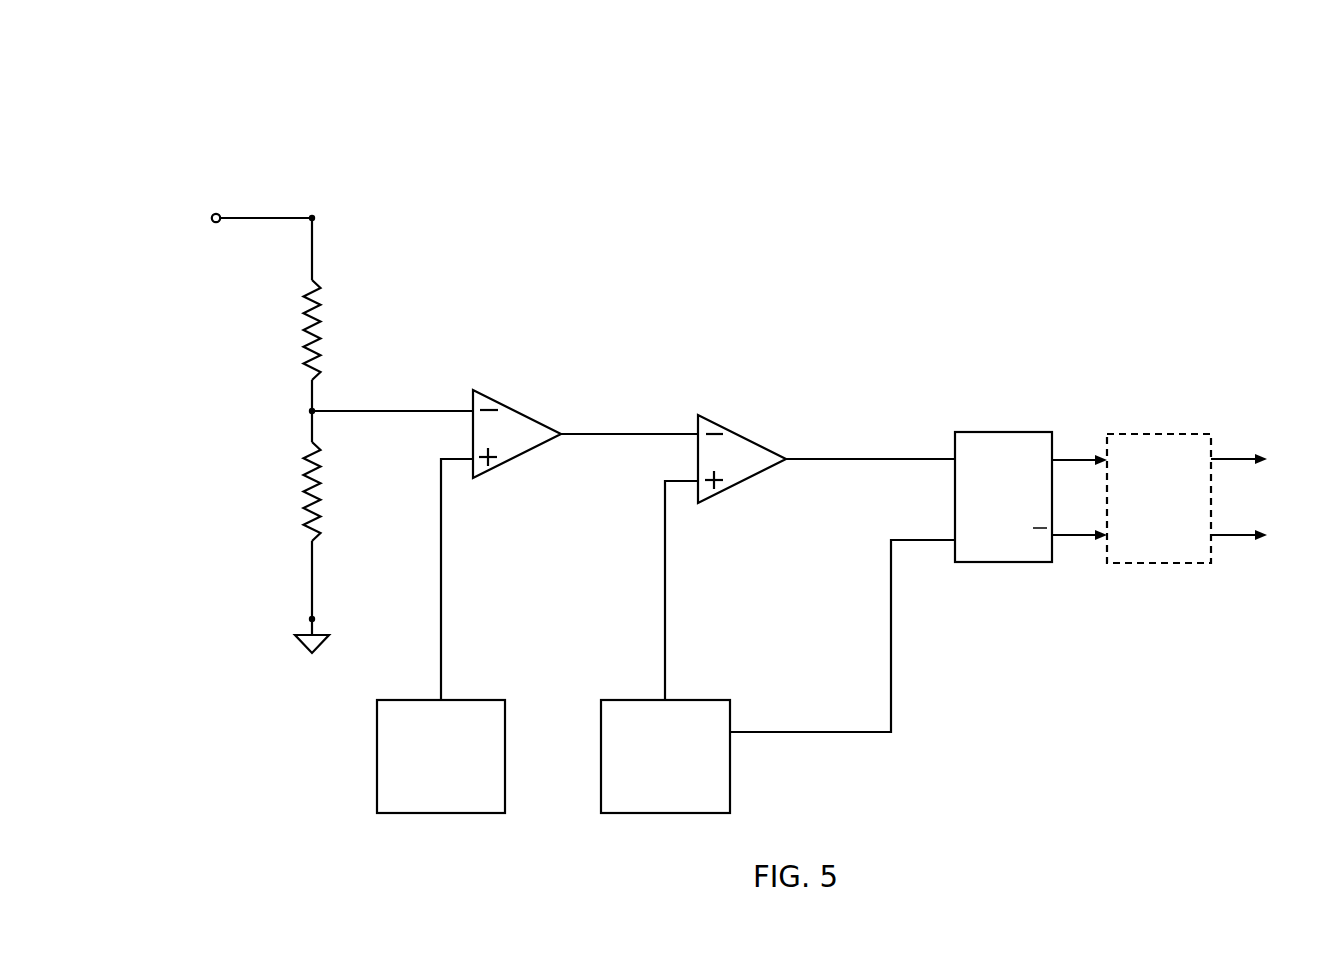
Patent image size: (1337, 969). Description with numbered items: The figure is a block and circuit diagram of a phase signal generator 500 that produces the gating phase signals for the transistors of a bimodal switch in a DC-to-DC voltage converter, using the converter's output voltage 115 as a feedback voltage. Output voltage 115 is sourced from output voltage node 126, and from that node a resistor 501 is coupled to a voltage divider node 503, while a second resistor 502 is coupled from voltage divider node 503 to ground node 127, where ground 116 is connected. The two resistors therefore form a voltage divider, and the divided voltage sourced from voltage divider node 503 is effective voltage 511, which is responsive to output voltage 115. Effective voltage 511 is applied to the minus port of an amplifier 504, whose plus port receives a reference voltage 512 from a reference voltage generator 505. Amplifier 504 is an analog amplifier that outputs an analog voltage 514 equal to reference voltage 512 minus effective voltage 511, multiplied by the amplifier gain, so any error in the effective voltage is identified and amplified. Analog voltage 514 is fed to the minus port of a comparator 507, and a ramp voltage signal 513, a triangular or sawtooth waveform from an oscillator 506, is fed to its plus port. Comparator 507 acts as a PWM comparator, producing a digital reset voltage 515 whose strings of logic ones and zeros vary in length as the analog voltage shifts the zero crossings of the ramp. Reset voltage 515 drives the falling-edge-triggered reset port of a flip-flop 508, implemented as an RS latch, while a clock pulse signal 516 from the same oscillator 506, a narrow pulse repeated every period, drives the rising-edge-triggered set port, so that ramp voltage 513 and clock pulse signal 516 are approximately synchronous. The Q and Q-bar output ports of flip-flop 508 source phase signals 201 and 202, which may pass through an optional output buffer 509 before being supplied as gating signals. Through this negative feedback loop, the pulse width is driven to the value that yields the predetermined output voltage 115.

The phase signal generator 500 is at (1216, 78).
The output voltage 115 is at (217, 210).
The output voltage node 126 is at (310, 211).
The resistor 501 is at (304, 360).
The resistor 502 is at (304, 522).
The voltage divider node 503 is at (308, 412).
The ground node 127 is at (316, 618).
The ground 116 is at (302, 647).
The effective voltage 511 is at (363, 410).
The amplifier 504 is at (500, 402).
The reference voltage 512 is at (439, 540).
The reference voltage generator 505 is at (458, 805).
The analog voltage 514 is at (600, 433).
The comparator 507 is at (722, 425).
The ramp voltage signal 513 is at (663, 587).
The oscillator 506 is at (682, 779).
The clock pulse signal 516 is at (889, 601).
The reset voltage 515 is at (812, 458).
The flip-flop 508 is at (988, 432).
The output buffer 509 is at (1175, 508).
The phase signal 201 is at (1222, 458).
The phase signal 202 is at (1232, 534).